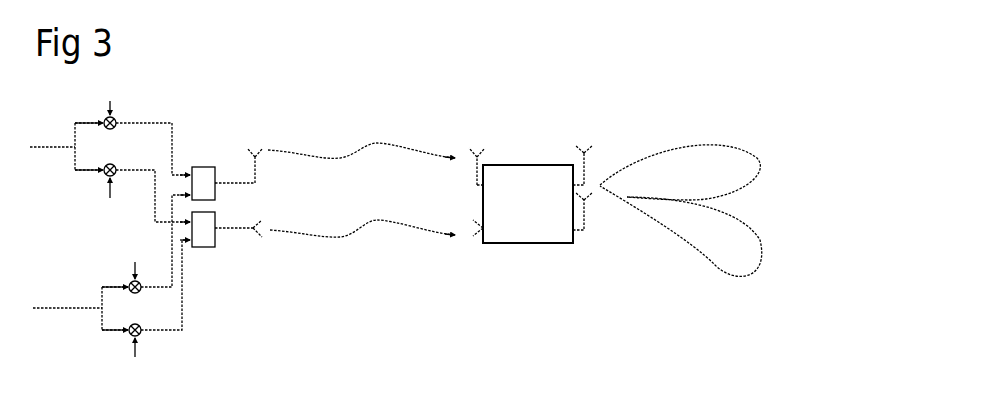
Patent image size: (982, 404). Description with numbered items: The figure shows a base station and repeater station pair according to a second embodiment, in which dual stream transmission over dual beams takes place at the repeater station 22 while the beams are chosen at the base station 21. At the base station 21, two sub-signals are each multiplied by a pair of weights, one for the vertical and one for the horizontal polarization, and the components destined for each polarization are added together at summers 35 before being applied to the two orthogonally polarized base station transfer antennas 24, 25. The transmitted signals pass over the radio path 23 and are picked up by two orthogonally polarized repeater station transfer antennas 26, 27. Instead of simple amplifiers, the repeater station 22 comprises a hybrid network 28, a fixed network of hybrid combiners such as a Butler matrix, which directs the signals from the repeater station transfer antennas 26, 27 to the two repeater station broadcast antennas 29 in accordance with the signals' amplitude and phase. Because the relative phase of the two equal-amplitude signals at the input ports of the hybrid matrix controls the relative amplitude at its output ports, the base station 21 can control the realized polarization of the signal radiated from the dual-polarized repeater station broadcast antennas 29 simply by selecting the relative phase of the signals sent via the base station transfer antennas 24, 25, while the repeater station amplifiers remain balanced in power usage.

The base station 21 is at (72, 325).
The repeater station 22 is at (512, 268).
The radio channel 23 is at (315, 297).
The base station transfer antenna 24 is at (238, 138).
The base station transfer antenna 25 is at (245, 259).
The repeater station transfer antenna 26 is at (485, 157).
The repeater station transfer antenna 27 is at (474, 238).
The hybrid network 28 is at (530, 165).
The repeater station broadcast antennas 29 is at (600, 243).
The summers 35 is at (192, 230).